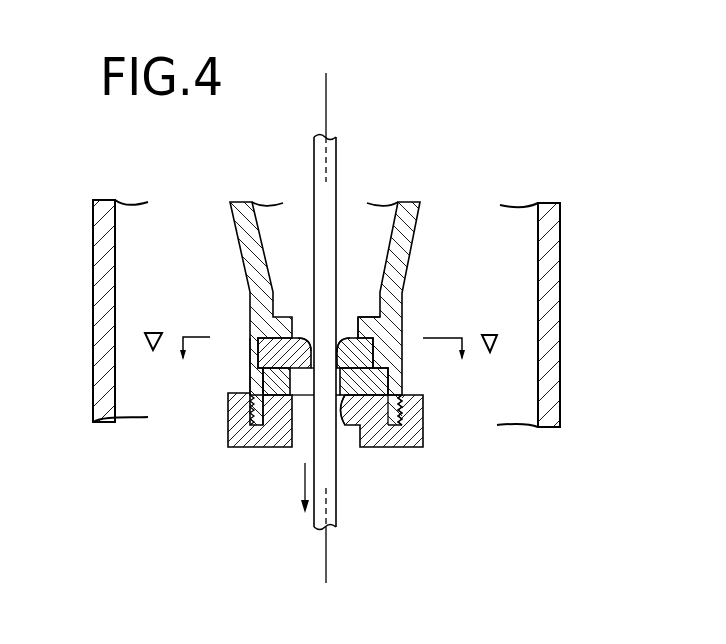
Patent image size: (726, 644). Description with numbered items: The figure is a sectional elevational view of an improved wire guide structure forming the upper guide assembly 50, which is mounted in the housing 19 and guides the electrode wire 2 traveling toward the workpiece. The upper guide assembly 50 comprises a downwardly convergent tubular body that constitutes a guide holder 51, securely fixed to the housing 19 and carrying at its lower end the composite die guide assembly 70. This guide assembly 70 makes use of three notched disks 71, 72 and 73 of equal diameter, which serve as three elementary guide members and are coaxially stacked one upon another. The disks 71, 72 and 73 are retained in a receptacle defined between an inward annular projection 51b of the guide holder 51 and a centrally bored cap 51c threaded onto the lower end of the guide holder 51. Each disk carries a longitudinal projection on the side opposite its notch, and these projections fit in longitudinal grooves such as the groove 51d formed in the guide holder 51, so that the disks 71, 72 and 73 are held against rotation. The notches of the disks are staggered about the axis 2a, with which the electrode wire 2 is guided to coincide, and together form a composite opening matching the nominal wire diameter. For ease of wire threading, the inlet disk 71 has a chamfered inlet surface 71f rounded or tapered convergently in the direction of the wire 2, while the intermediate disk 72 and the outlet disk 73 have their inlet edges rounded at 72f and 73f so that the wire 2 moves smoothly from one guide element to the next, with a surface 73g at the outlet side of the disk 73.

The electrode wire 2 is at (336, 493).
The axis 2a is at (337, 315).
The housing 19 is at (563, 322).
The upper guide assembly 50 is at (327, 313).
The guide holder 51 is at (418, 214).
The inward annular projection 51b is at (372, 318).
The centrally bored cap 51c is at (228, 447).
The longitudinal groove 51d is at (263, 383).
The composite die guide assembly 70 is at (287, 493).
The notched disk 71 is at (282, 356).
The chamfered inlet surface 71f is at (296, 343).
The notched disk 72 is at (385, 377).
The rounded inlet edge 72f is at (360, 336).
The notched disk 73 is at (392, 425).
The rounded inlet edge 73f is at (405, 399).
The lip of nut 73g is at (345, 425).